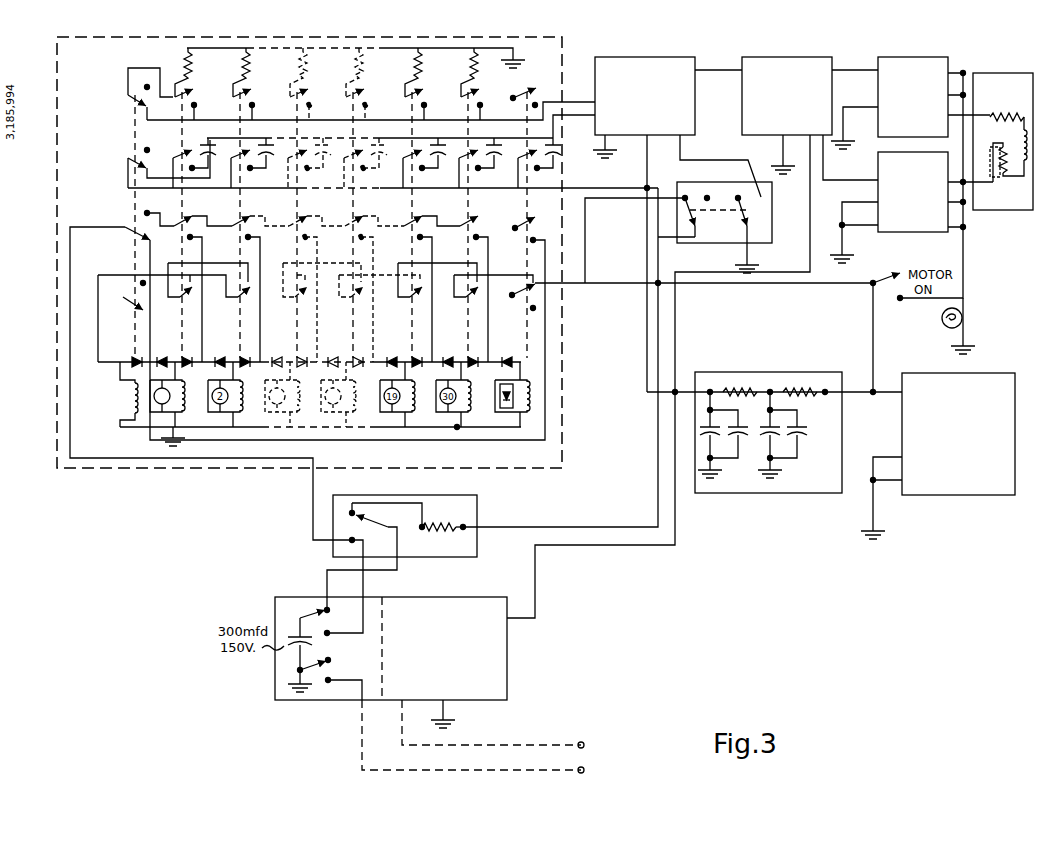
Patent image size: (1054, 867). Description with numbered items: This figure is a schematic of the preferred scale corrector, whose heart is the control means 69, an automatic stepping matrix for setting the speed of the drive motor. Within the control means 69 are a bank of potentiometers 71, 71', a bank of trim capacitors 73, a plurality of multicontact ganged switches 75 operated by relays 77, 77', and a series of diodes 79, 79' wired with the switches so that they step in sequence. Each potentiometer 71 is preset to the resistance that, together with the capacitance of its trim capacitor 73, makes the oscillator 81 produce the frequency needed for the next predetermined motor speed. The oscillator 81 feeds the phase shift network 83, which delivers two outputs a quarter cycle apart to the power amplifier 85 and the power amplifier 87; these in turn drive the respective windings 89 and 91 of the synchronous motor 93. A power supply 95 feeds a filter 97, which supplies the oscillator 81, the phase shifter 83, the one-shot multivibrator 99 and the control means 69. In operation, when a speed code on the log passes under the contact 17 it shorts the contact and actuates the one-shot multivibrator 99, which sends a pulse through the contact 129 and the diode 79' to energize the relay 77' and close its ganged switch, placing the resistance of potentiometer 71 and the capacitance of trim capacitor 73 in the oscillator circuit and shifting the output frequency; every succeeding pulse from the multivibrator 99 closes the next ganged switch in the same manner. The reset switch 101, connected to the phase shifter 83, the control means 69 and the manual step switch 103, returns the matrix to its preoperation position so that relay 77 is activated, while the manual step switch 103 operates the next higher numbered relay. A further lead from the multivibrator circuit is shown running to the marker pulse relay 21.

The control means 69 is at (58, 93).
The potentiometer 71 is at (193, 84).
The potentiometer 71' is at (251, 84).
The trim capacitor 73 is at (207, 148).
The multicontact ganged switch 75 is at (130, 152).
The relay 77 is at (134, 395).
The relay 77' is at (179, 395).
The diode 79 is at (133, 354).
The diode 79' is at (158, 351).
The oscillator 81 is at (697, 64).
The phase shift network 83 is at (834, 64).
The power amplifier 85 is at (950, 64).
The power amplifier 87 is at (918, 232).
The winding 89 is at (1021, 137).
The winding 91 is at (1009, 189).
The synchronous motor 93 is at (1003, 74).
The power supply 95 is at (985, 373).
The filter 97 is at (842, 452).
The one-shot multivibrator 99 is at (508, 683).
The reset switch 101 is at (772, 222).
The manual step switch 103 is at (478, 546).
The contact 129 is at (152, 240).
The contact 17 is at (493, 724).
The marker pulse relay connection 21 is at (482, 736).